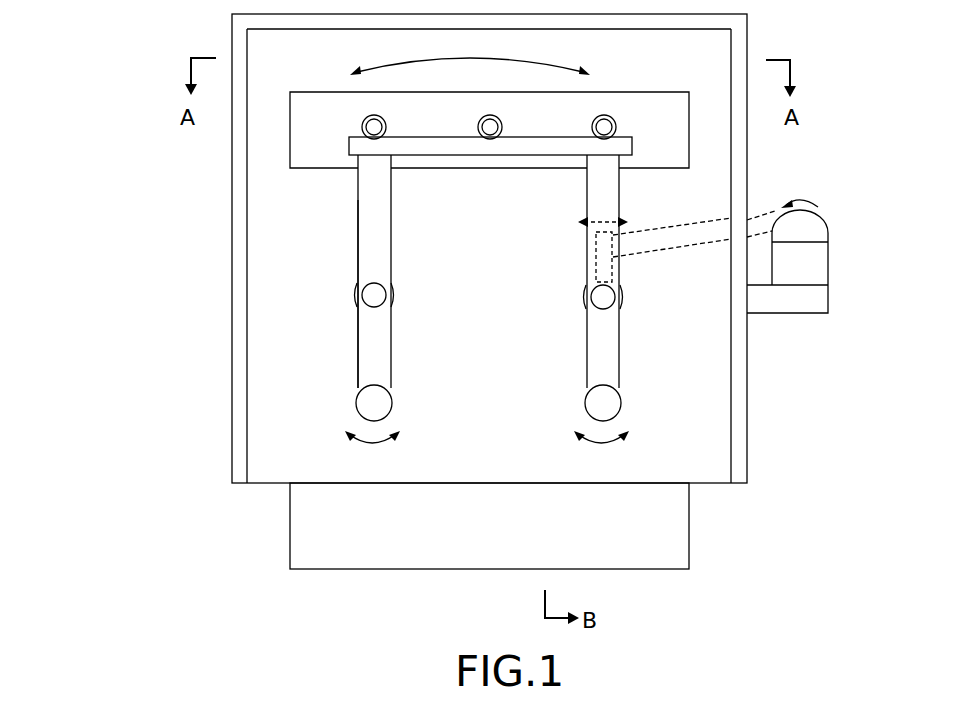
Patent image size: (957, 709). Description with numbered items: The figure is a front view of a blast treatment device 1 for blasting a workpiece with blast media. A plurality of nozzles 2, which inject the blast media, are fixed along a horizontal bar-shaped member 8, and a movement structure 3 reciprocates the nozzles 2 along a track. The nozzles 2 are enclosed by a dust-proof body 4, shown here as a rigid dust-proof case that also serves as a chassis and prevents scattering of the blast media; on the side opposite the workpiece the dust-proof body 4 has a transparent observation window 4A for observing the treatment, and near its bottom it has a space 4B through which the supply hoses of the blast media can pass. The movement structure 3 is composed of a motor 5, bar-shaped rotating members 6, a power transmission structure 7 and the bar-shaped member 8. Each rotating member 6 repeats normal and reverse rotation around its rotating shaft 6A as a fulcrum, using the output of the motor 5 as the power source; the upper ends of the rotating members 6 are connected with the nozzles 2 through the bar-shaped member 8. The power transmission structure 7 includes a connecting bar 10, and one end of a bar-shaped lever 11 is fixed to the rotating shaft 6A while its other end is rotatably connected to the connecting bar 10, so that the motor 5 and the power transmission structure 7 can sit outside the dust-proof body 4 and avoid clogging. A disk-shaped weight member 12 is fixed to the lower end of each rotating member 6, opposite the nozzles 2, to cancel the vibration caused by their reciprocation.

The blast treatment device 1 is at (122, 52).
The nozzle 2 is at (368, 114).
The movement structure 3 is at (406, 342).
The dust-proof body 4 is at (748, 195).
The transparent observation window 4A is at (668, 152).
The space 4B is at (703, 468).
The motor 5 is at (832, 256).
The rotating member 6 is at (353, 370).
The rotating shaft 6A is at (393, 290).
The power transmission structure 7 is at (722, 310).
The bar-shaped member 8 is at (535, 155).
The connecting bar 10 is at (703, 243).
The lever 11 is at (620, 262).
The weight member 12 is at (356, 405).